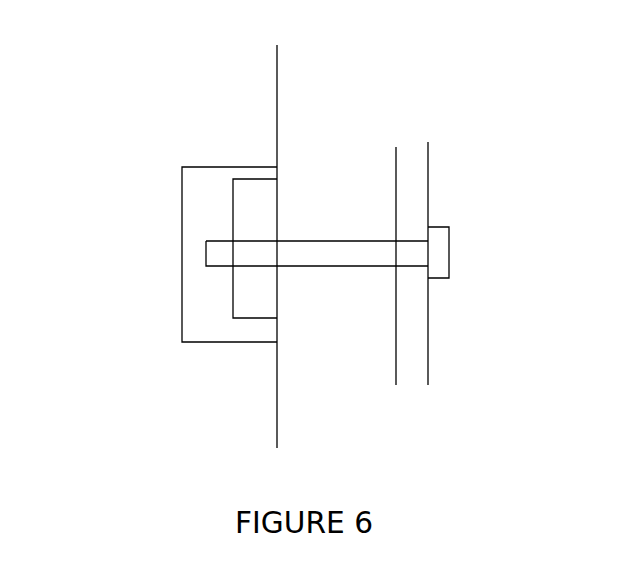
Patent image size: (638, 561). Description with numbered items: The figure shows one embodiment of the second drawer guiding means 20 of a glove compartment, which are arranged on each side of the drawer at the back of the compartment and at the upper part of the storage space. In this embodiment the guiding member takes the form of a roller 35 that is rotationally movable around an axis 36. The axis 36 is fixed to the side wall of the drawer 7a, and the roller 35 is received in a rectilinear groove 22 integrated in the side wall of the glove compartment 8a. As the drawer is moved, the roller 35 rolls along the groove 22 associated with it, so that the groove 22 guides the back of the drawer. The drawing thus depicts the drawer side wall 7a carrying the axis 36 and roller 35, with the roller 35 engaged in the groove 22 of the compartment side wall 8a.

The second drawer guiding means 20 is at (209, 128).
The rectilinear groove 22 is at (181, 187).
The roller 35 is at (278, 215).
The axis 36 is at (348, 270).
The side wall of the drawer 7a is at (428, 188).
The side wall of the glove compartment 8a is at (277, 380).